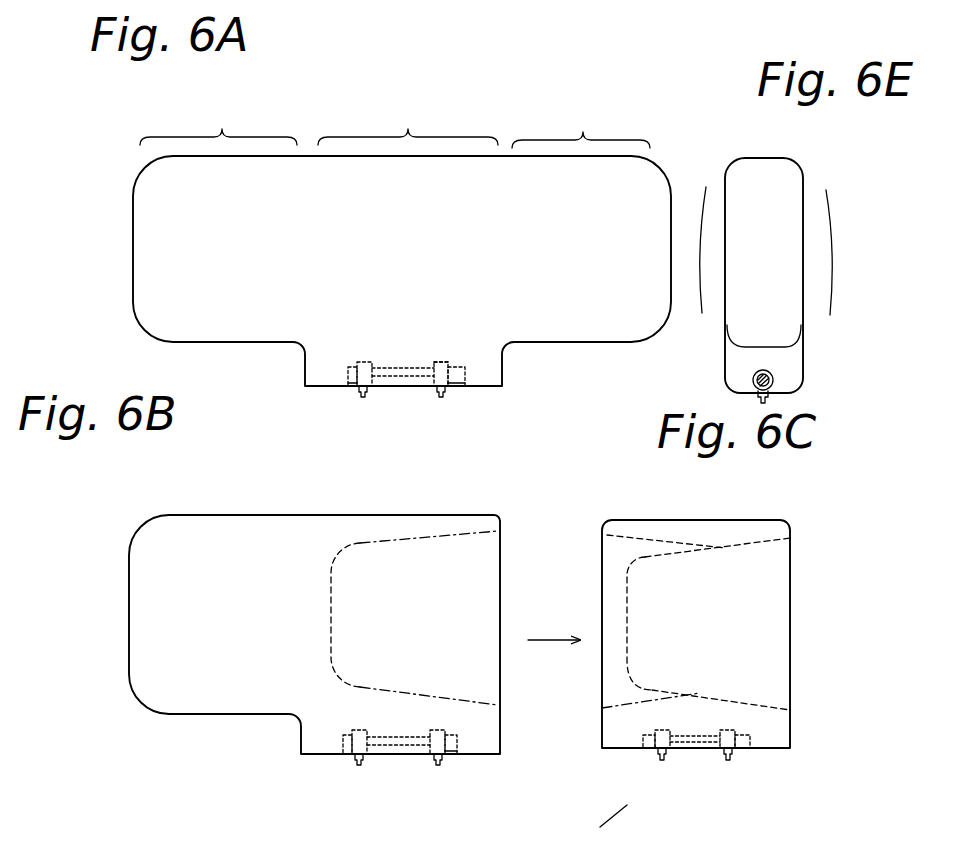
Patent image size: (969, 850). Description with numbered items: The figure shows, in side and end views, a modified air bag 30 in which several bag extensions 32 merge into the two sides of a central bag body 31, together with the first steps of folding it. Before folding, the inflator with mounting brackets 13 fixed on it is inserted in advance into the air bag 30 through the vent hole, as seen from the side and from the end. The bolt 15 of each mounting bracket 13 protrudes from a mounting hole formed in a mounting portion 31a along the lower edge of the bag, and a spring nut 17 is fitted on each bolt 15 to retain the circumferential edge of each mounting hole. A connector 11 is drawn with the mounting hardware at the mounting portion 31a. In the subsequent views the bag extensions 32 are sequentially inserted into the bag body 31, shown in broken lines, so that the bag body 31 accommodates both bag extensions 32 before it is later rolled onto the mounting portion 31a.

In FIG. 6A, the air bag 30 is at (512, 122).
In FIG. 6E, the air bag 30 is at (725, 148).
In FIG. 6B, the air bag 30 is at (487, 508).
In FIG. 6C, the air bag 30 is at (727, 512).
In FIG. 6A, the bag body 31 is at (408, 122).
In FIG. 6B, the bag body 31 is at (428, 528).
In FIG. 6C, the bag body 31 is at (692, 534).
In FIG. 6A, the bag extension 32 is at (395, 124).
In FIG. 6B, the bag extension 32 is at (212, 530).
In FIG. 6C, the bag extension 32 is at (780, 494).
In FIG. 6A, the mounting portion 31a is at (447, 389).
In FIG. 6B, the mounting portion 31a is at (455, 758).
In FIG. 6A, the connector 11 is at (403, 374).
In FIG. 6B, the connector 11 is at (397, 757).
In FIG. 6C, the connector 11 is at (695, 752).
In FIG. 6A, the mounting bracket 13 is at (440, 362).
In FIG. 6A, the bolt 15 is at (363, 398).
In FIG. 6A, the spring nut 17 is at (356, 388).